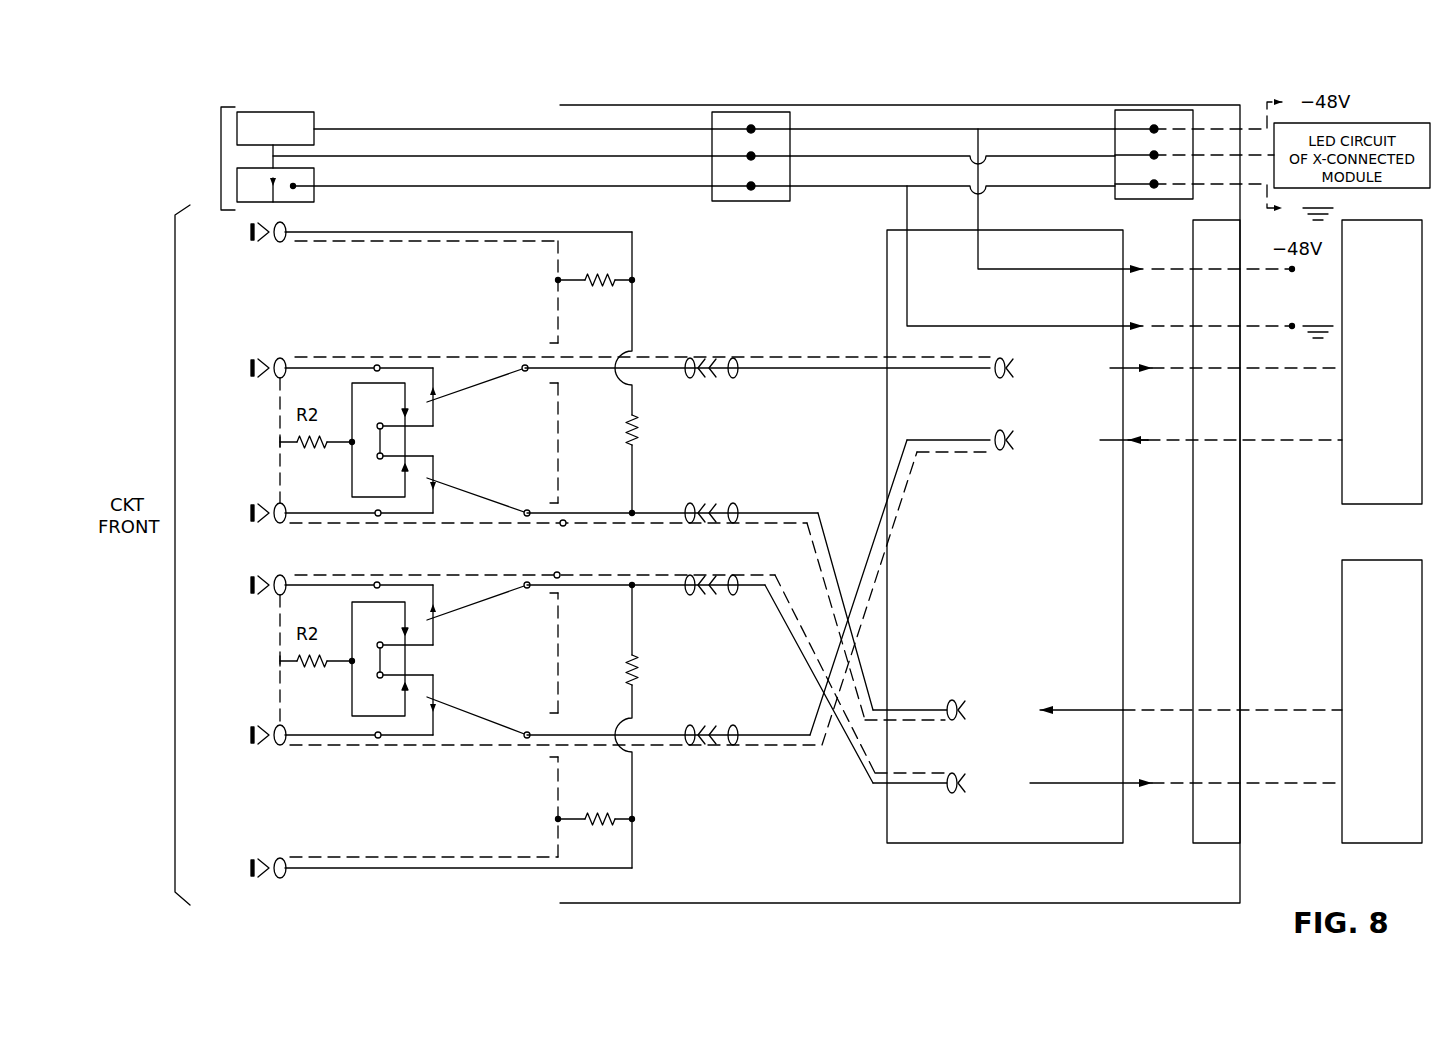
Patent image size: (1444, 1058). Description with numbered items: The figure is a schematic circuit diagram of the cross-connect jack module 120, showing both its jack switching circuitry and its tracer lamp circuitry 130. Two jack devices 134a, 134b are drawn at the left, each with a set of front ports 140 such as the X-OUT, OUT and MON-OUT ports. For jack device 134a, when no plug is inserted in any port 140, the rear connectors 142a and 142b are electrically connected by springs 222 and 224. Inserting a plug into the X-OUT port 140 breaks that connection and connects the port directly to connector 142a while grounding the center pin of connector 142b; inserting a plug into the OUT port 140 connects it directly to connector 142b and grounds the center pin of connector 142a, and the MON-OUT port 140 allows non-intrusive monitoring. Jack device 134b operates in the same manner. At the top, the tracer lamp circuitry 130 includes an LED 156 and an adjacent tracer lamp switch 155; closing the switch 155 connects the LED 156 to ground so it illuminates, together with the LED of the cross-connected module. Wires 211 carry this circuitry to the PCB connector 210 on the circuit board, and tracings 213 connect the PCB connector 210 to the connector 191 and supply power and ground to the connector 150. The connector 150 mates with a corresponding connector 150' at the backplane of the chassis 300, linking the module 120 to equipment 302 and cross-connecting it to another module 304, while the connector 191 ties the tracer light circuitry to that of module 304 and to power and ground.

The cross-connect module 120 is at (492, 133).
The tracer lamp circuitry 130 is at (221, 157).
The tracer lamp switch 155 is at (318, 200).
The light emitting diode (LED) 156 is at (318, 139).
The wires 211 is at (450, 99).
The tracings 213 is at (924, 128).
The PCB connector 210 is at (745, 203).
The connector 191 is at (1152, 201).
The chassis 300 is at (1221, 105).
The jack device 134a is at (635, 378).
The jack device 134b is at (690, 788).
The ports 140 is at (230, 557).
The connector 142a is at (688, 387).
The connector 142b is at (688, 490).
The spring 222 is at (487, 386).
The spring 224 is at (485, 497).
The connector 150 is at (1025, 536).
The corresponding connector 150' is at (1190, 531).
The equipment 302 is at (1340, 597).
The module 304 is at (1342, 428).